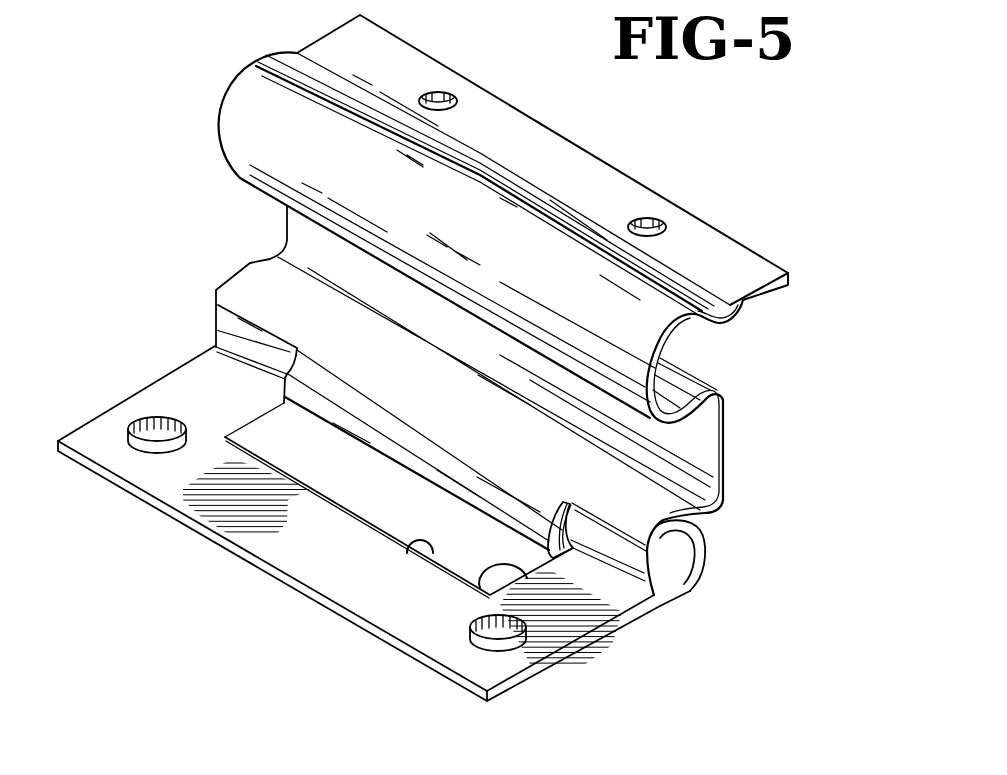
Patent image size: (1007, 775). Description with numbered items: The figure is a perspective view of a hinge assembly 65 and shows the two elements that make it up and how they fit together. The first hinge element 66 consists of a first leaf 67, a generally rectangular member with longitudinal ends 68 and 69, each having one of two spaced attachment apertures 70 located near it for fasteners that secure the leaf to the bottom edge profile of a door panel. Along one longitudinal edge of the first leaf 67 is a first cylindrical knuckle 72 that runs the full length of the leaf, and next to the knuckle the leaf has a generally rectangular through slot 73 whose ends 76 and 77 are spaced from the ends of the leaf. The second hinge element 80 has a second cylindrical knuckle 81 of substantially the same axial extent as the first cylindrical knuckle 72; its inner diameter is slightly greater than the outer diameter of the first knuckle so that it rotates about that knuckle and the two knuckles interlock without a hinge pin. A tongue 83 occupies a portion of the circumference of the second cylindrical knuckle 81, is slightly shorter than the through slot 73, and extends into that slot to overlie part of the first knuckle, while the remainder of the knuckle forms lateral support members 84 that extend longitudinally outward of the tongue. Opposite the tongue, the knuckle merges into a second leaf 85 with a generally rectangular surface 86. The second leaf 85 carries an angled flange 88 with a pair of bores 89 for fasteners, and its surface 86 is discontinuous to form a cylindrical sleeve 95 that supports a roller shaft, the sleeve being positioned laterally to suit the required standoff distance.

The hinge assembly 65 is at (165, 125).
The first hinge element 66 is at (600, 630).
The first leaf 67 is at (487, 670).
The longitudinal end 68 is at (562, 657).
The longitudinal end 69 is at (127, 401).
The attachment apertures 70 is at (163, 443).
The first cylindrical knuckle 72 is at (687, 585).
The through slot 73 is at (457, 557).
The end of the through slot 76 is at (250, 428).
The end of the through slot 77 is at (487, 578).
The second hinge element 80 is at (763, 297).
The second cylindrical knuckle 81 is at (660, 533).
The tongue 83 is at (447, 460).
The lateral support members 84 is at (268, 303).
The second leaf 85 is at (723, 423).
The rectangular surface 86 is at (704, 443).
The flange 88 is at (700, 227).
The bores 89 is at (436, 95).
The cylindrical sleeve 95 is at (288, 122).